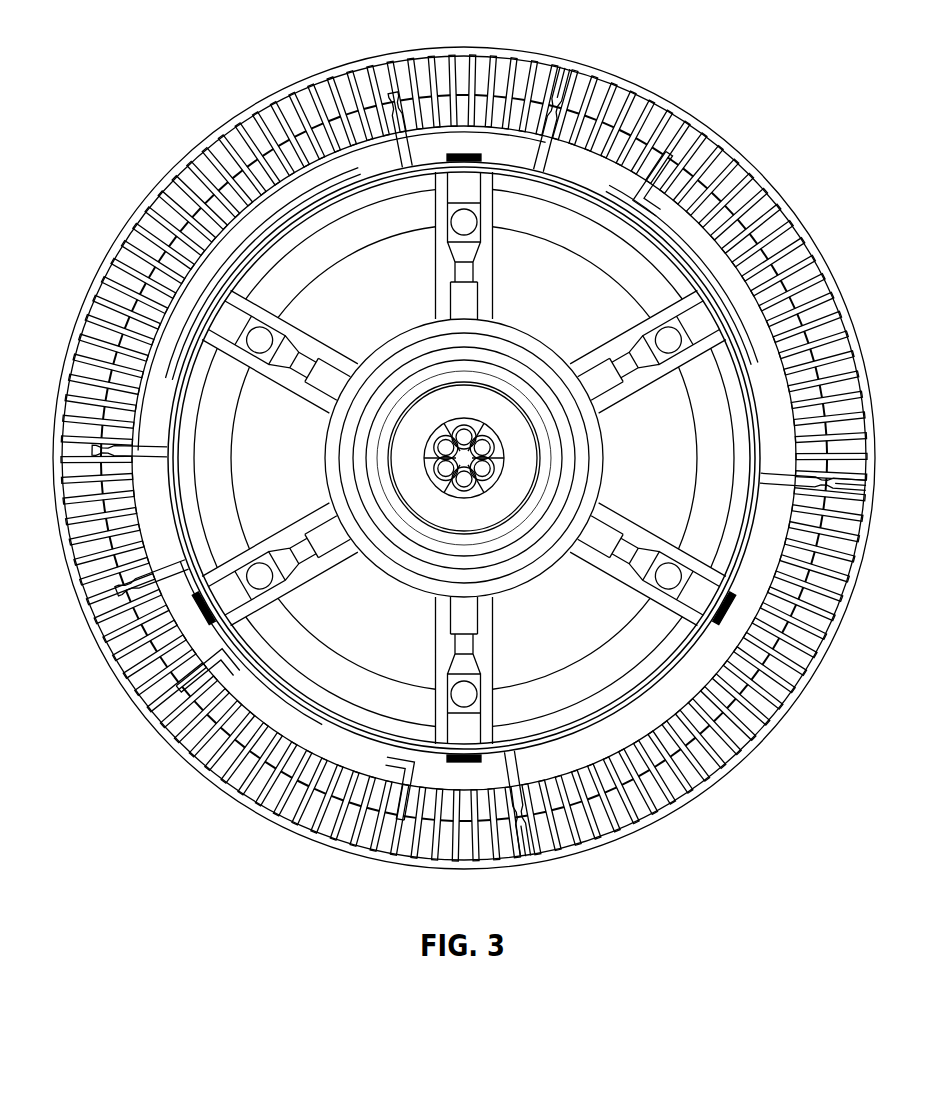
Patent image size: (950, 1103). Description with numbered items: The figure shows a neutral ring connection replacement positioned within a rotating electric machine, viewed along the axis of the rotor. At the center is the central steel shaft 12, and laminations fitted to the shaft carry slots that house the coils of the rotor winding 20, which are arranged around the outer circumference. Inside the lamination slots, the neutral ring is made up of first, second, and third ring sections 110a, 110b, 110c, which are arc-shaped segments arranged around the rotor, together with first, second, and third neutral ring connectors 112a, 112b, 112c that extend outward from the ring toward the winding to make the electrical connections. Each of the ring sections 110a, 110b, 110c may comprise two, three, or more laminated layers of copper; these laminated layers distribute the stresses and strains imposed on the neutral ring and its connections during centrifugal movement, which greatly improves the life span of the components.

The central steel shaft 12 is at (481, 415).
The rotor winding 20 is at (750, 162).
The first ring section 110a is at (750, 455).
The second ring section 110b is at (263, 653).
The third ring section 110c is at (333, 195).
The first neutral ring connector 112a is at (557, 95).
The second neutral ring connector 112b is at (520, 860).
The third neutral ring connector 112c is at (105, 442).